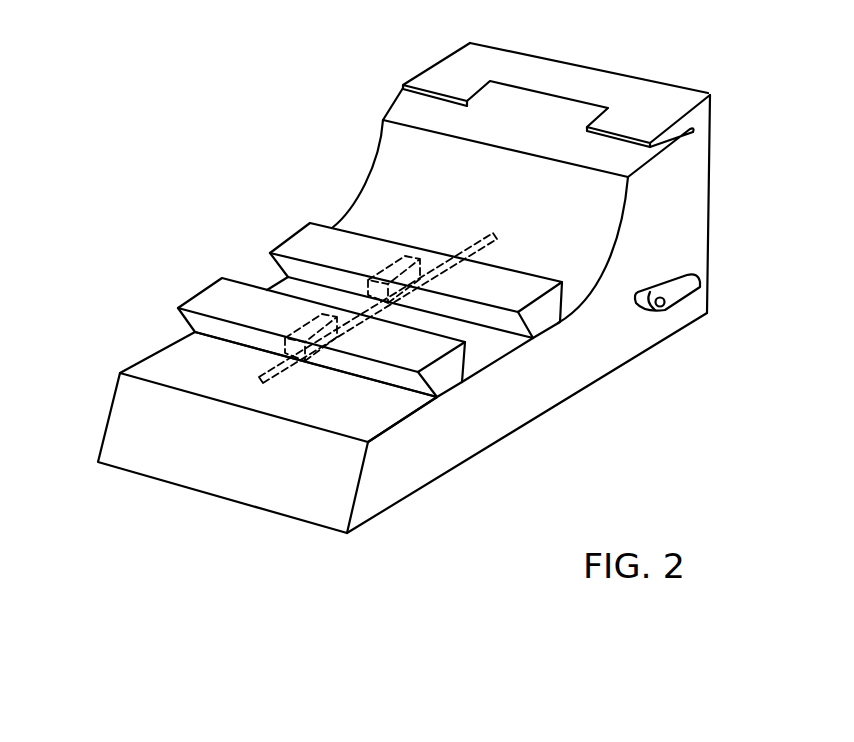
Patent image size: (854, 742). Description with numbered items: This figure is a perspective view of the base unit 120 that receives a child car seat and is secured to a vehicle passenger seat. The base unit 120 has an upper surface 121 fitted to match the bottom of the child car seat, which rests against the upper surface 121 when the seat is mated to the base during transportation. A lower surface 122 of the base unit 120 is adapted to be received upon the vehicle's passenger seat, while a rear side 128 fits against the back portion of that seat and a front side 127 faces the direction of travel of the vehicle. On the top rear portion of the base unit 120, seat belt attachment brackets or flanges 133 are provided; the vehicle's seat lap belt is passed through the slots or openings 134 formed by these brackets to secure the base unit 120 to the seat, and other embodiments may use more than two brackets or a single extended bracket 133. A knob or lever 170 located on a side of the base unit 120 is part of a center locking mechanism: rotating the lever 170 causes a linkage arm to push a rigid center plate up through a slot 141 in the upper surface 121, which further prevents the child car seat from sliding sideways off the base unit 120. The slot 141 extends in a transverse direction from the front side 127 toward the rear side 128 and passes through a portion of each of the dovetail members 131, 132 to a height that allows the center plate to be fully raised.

The base unit 120 is at (397, 538).
The upper surface 121 is at (338, 413).
The lower surface 122 is at (552, 410).
The front side 127 is at (128, 419).
The rear side 128 is at (713, 192).
The dovetail member 131 is at (440, 380).
The dovetail member 132 is at (538, 318).
The seat belt attachment bracket 133 is at (437, 77).
The slot or opening 134 is at (505, 89).
The slot 141 is at (262, 381).
The knob or lever 170 is at (683, 292).